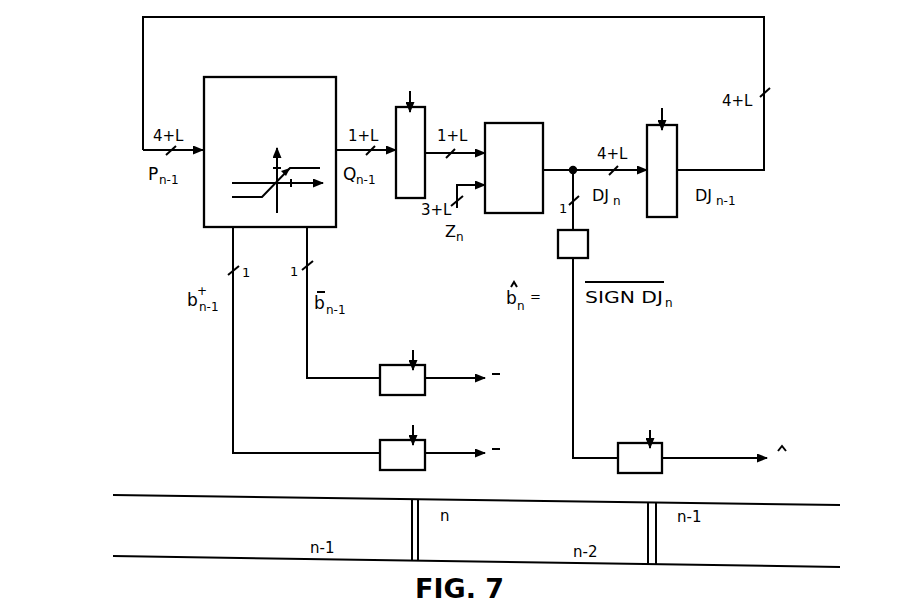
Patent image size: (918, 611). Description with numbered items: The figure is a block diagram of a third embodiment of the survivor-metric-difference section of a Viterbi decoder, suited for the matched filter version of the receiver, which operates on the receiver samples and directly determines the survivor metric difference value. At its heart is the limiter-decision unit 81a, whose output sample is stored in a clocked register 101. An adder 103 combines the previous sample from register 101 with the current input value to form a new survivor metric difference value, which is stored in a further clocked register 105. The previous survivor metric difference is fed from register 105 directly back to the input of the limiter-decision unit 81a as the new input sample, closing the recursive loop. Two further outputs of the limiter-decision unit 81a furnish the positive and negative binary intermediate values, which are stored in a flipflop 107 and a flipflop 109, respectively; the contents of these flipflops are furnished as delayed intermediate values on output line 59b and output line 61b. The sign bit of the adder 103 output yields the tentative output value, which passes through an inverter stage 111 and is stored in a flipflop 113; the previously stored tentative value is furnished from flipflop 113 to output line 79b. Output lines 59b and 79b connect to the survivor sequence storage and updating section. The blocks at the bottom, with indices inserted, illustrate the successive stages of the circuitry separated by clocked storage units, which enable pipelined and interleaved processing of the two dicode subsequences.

The limiter-decision unit 81a is at (290, 77).
The clocked register 101 is at (425, 118).
The adder 103 is at (505, 123).
The clocked register 105 is at (677, 140).
The inverter 111 is at (588, 252).
The flipflop 107 is at (386, 441).
The flipflop 109 is at (425, 372).
The flipflop 113 is at (627, 443).
The output line 59b is at (460, 455).
The output line 61b is at (461, 383).
The output line 79b is at (710, 457).